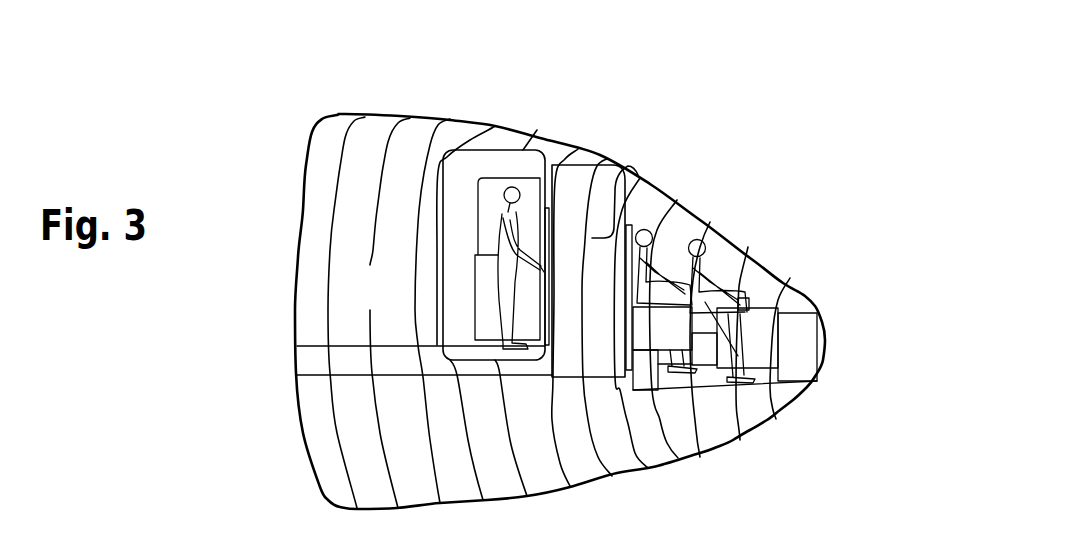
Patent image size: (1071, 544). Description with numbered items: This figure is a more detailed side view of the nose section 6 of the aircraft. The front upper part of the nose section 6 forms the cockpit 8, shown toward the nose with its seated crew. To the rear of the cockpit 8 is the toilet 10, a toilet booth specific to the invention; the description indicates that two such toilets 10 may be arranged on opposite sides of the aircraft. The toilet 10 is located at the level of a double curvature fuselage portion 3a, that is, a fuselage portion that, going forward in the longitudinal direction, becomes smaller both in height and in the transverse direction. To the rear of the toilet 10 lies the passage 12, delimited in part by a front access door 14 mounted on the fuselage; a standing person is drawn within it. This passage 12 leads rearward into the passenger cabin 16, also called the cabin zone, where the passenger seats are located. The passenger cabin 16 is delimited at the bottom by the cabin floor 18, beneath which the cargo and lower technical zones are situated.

The nose section 6 is at (518, 106).
The cockpit 8 is at (764, 273).
The toilet 10 is at (579, 201).
The passage 12 is at (473, 245).
The front access door 14 is at (490, 197).
The passenger cabin 16 is at (380, 301).
The cabin floor 18 is at (350, 357).
The double curvature fuselage portion 3a is at (630, 163).